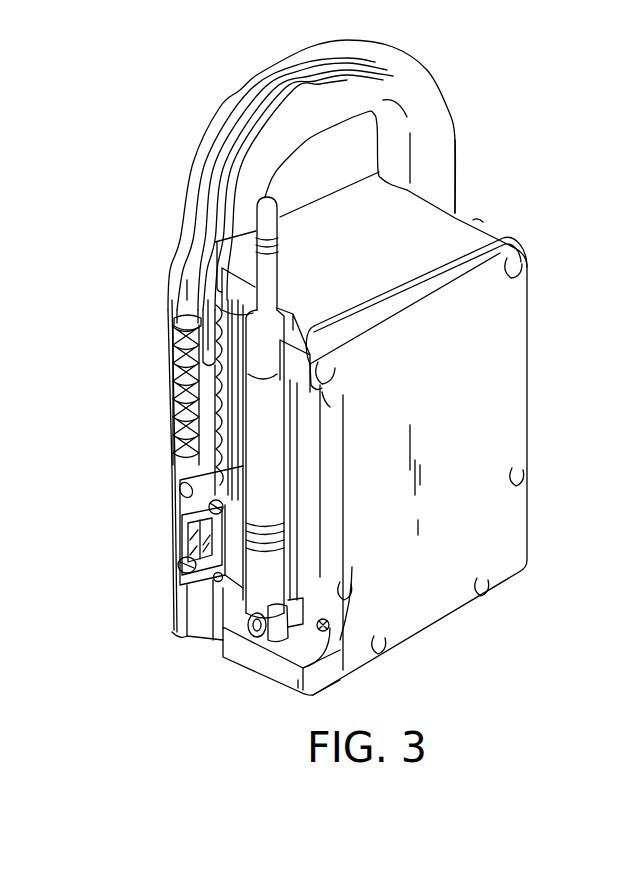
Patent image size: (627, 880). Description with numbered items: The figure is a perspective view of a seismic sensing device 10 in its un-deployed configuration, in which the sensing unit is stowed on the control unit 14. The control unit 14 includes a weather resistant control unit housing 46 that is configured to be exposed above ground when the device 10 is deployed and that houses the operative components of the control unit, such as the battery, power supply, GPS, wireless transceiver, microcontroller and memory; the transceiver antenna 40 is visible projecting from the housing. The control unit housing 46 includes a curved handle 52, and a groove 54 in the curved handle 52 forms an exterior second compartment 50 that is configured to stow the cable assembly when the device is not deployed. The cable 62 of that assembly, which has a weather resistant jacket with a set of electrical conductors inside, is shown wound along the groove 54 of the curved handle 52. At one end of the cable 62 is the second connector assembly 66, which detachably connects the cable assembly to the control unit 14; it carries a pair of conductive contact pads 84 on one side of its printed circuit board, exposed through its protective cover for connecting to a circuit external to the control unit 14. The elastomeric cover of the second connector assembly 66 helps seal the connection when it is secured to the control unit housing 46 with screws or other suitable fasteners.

The seismic sensing device 10 is at (165, 112).
The control unit 14 is at (162, 406).
The transceiver antenna 40 is at (272, 222).
The control unit housing 46 is at (510, 345).
The second compartment 50 is at (377, 64).
The curved handle 52 is at (435, 121).
The groove 54 is at (305, 85).
The cable 62 is at (280, 104).
The second connector assembly 66 is at (170, 552).
The conductive contact pads 84 is at (183, 542).